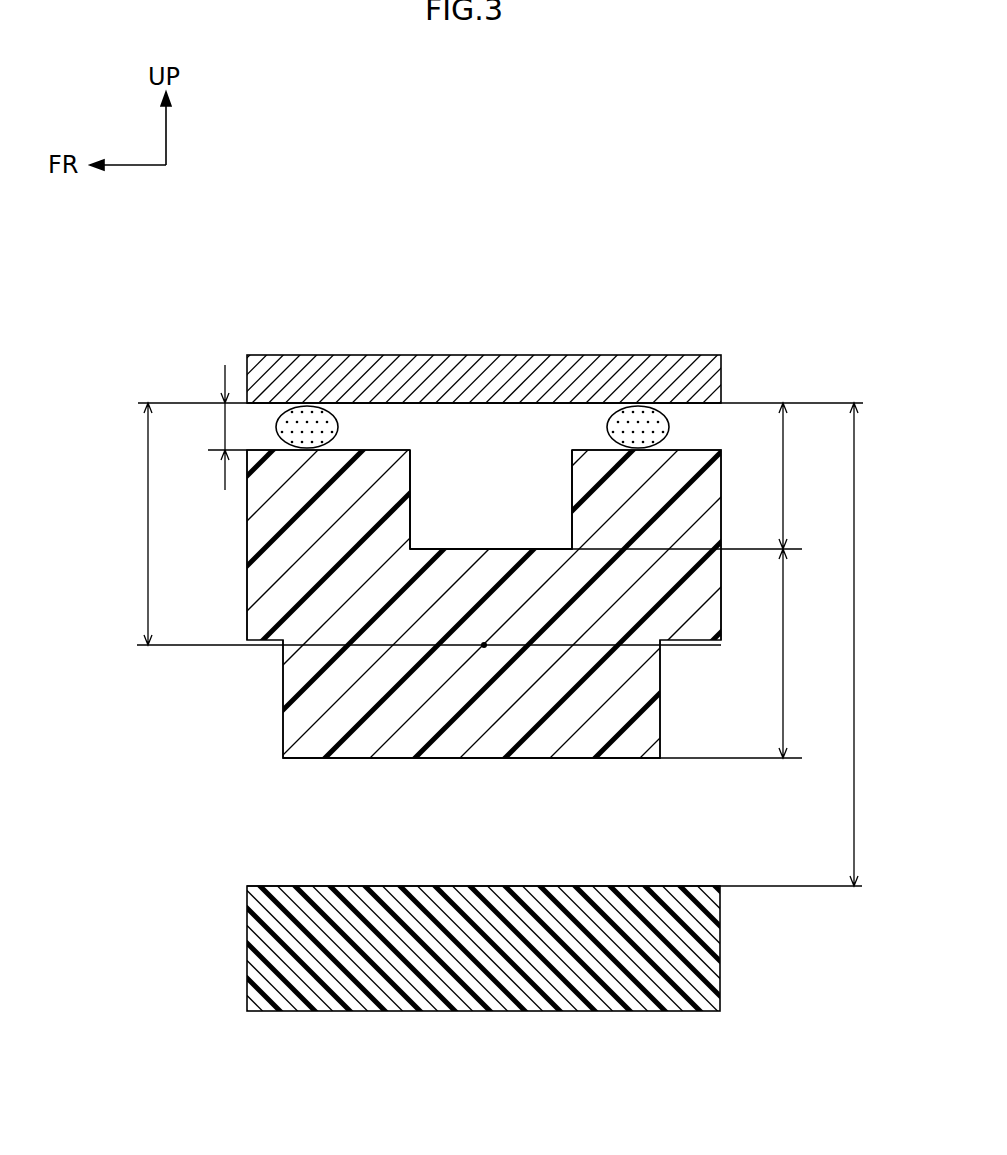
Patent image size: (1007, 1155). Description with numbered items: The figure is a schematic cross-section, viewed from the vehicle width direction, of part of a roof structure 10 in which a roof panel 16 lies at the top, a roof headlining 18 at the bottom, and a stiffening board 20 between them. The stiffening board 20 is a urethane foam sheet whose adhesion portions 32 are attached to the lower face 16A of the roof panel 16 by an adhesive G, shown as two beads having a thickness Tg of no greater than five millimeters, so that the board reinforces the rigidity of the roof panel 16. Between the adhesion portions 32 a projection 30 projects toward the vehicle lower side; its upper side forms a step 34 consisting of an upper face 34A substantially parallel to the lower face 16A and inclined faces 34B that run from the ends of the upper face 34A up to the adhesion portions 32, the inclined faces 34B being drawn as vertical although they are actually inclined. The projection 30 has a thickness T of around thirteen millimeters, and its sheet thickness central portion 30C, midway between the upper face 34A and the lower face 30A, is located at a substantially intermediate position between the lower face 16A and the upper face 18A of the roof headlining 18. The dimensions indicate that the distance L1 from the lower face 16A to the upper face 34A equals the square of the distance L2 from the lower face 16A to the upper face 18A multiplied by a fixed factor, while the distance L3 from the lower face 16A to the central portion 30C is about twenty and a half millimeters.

The roof structure 10 is at (209, 326).
The roof panel 16 is at (471, 344).
The lower face of roof panel 16A is at (489, 403).
The roof headlining 18 is at (235, 959).
The upper face of roof headlining 18A is at (283, 885).
The stiffening board 20 is at (272, 700).
The projection 30 is at (489, 769).
The lower face of projection 30A is at (558, 759).
The sheet thickness central portion 30C is at (484, 648).
The adhesion portion 32 is at (693, 450).
The step 34 is at (500, 537).
The upper face of step 34A is at (452, 549).
The inclined face 34B is at (411, 478).
The adhesive G is at (309, 426).
The thickness of adhesive Tg is at (225, 424).
The shortest distance from roof panel lower face to step upper face L1 is at (784, 478).
The shortest distance from roof panel lower face to headlining upper face L2 is at (856, 641).
The shortest distance from roof panel lower face to central portion L3 is at (148, 515).
The thickness of stiffening board T is at (784, 651).